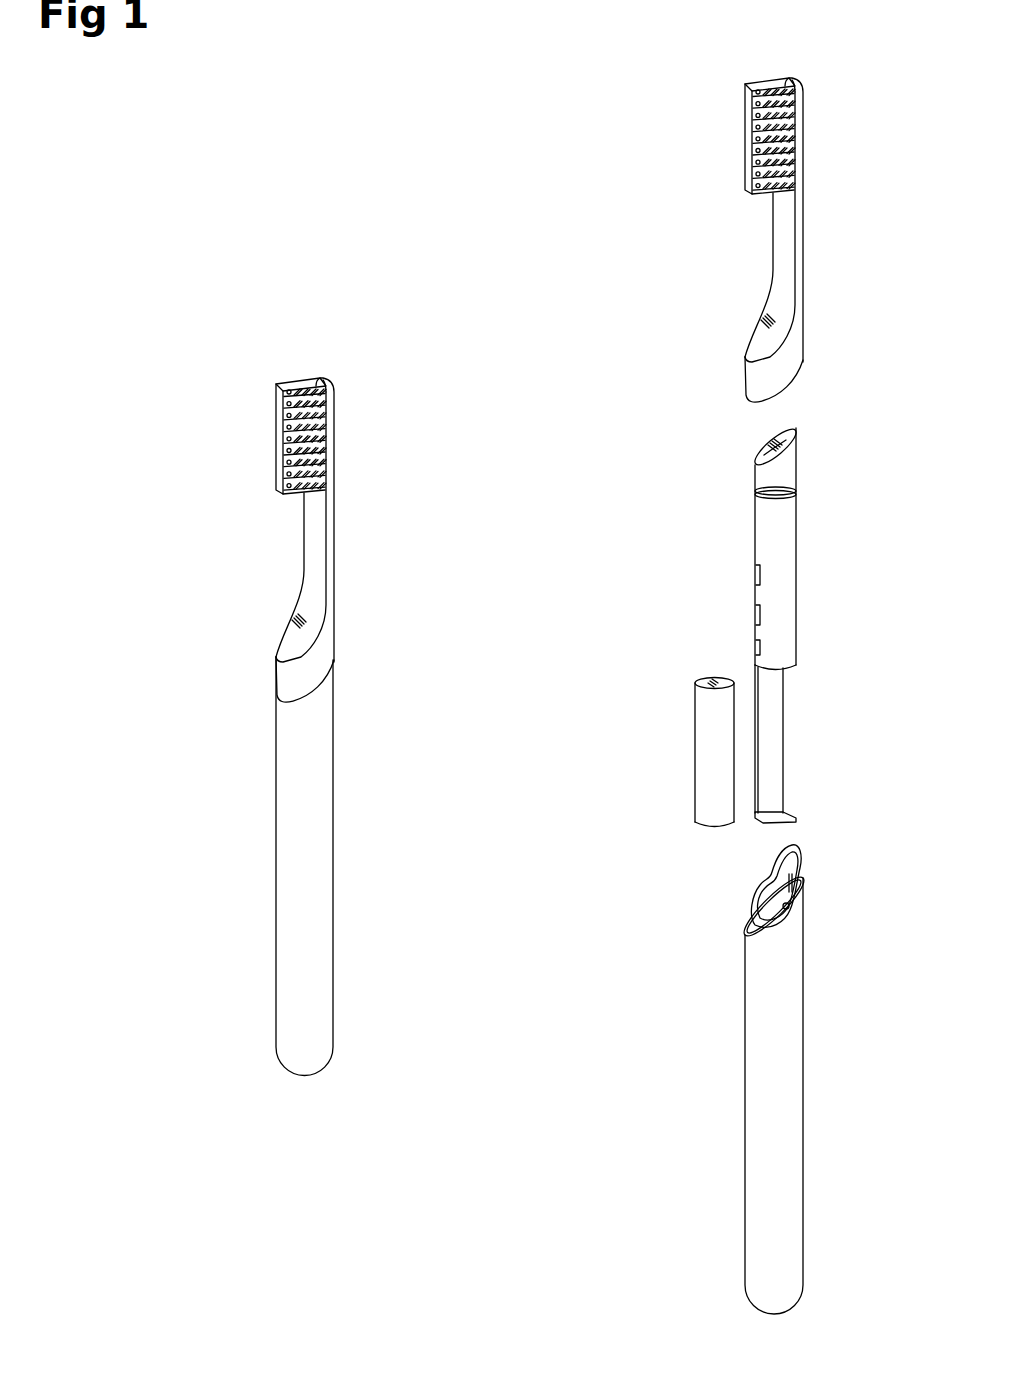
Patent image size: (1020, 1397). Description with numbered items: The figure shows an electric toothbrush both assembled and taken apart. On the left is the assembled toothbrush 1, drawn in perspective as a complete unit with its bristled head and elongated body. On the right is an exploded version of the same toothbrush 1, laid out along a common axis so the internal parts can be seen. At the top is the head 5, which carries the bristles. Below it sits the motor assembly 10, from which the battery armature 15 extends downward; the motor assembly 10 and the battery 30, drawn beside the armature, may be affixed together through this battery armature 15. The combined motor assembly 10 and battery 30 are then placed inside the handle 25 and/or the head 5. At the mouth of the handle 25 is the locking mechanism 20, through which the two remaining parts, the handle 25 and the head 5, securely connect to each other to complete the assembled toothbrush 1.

The toothbrush 1 is at (317, 707).
The head 5 is at (782, 365).
The motor assembly 10 is at (782, 517).
The battery armature 15 is at (773, 723).
The locking mechanism 20 is at (807, 873).
The handle 25 is at (782, 992).
The battery 30 is at (702, 762).